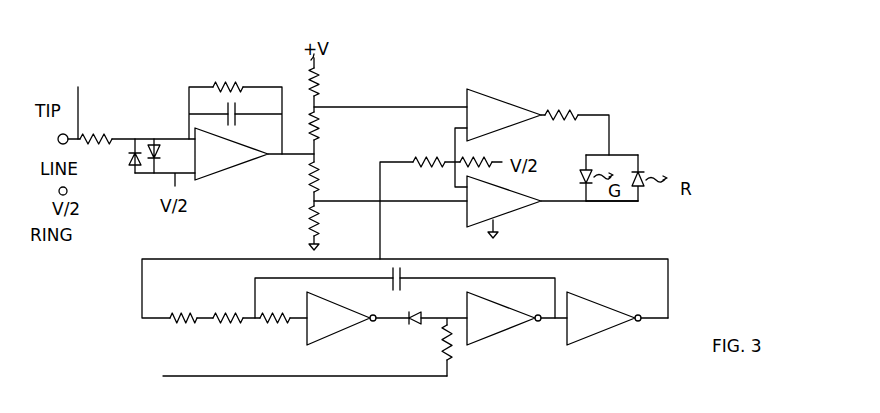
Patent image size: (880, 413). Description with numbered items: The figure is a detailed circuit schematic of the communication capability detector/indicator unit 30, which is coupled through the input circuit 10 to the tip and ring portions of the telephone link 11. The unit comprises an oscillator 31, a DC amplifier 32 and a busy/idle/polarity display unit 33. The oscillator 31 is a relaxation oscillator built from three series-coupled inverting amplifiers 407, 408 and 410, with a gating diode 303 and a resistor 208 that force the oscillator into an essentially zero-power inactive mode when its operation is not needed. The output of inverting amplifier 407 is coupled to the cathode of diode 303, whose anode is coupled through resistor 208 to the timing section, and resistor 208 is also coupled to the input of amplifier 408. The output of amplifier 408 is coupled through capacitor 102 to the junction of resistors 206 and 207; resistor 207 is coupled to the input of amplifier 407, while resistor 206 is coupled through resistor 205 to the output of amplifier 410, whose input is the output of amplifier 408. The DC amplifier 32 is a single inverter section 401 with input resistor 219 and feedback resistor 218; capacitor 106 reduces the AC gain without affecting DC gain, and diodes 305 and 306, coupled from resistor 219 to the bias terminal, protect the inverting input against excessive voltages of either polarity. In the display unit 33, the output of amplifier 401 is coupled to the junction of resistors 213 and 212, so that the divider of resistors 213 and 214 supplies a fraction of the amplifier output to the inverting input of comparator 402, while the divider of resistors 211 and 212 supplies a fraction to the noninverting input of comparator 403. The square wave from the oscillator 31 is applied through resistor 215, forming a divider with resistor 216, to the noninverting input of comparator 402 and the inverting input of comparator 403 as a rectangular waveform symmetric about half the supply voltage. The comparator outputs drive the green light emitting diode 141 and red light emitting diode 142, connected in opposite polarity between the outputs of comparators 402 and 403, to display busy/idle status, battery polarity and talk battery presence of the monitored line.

The input circuit 10 is at (115, 190).
The telephone link 11 is at (81, 102).
The communication capability detector/indicator unit 30 is at (691, 255).
The oscillator 31 is at (218, 355).
The DC amplifier 32 is at (135, 64).
The busy/idle/polarity display unit 33 is at (672, 106).
The capacitor 102 is at (393, 291).
The capacitor 106 is at (236, 117).
The light emitting diode 141 is at (581, 182).
The light emitting diode 142 is at (642, 170).
The resistor 205 is at (185, 311).
The resistor 206 is at (232, 312).
The resistor 207 is at (273, 325).
The resistor 208 is at (456, 343).
The resistor 211 is at (326, 228).
The resistor 212 is at (326, 184).
The resistor 213 is at (326, 134).
The resistor 214 is at (326, 84).
The resistor 215 is at (428, 152).
The resistor 216 is at (560, 124).
The feedback resistor 218 is at (228, 78).
The input resistor 219 is at (99, 133).
The gating diode 303 is at (413, 325).
The diode 305 is at (135, 173).
The diode 306 is at (158, 137).
The inverter section 401 is at (243, 173).
The comparator 402 is at (503, 99).
The comparator 403 is at (467, 218).
The inverting amplifier 407 is at (338, 333).
The inverting amplifier 408 is at (515, 330).
The inverting amplifier 410 is at (606, 330).